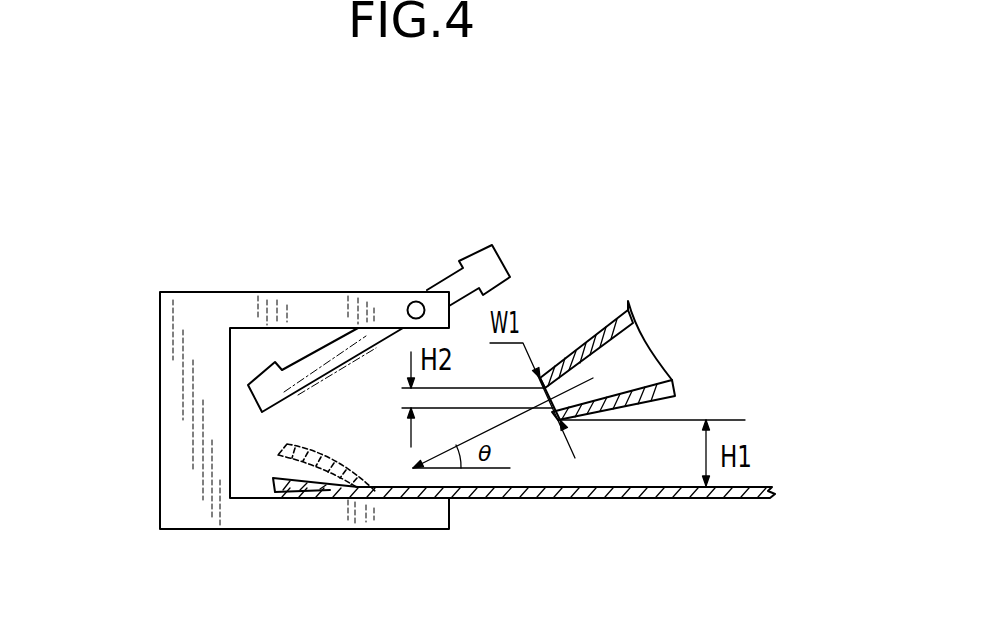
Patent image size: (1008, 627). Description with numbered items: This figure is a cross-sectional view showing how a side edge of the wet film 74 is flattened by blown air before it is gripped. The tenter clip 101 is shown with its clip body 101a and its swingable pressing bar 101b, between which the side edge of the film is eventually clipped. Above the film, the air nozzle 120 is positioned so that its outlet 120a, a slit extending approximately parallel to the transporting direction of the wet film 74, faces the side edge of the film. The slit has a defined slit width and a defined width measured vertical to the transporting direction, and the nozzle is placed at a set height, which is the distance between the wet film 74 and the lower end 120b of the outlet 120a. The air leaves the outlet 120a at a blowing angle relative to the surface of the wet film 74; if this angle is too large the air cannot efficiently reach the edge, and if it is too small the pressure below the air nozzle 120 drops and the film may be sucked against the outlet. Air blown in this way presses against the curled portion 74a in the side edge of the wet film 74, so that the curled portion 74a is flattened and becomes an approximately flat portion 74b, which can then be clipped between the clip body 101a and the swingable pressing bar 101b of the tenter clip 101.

The tenter clip 101 is at (290, 220).
The clip body 101a is at (160, 412).
The swingable pressing bar 101b is at (482, 265).
The air nozzle 120 is at (610, 323).
The outlet 120a is at (569, 387).
The lower end 120b is at (563, 424).
The wet film 74 is at (609, 499).
The curled portion 74a is at (310, 450).
The approximately flat portion 74b is at (302, 500).